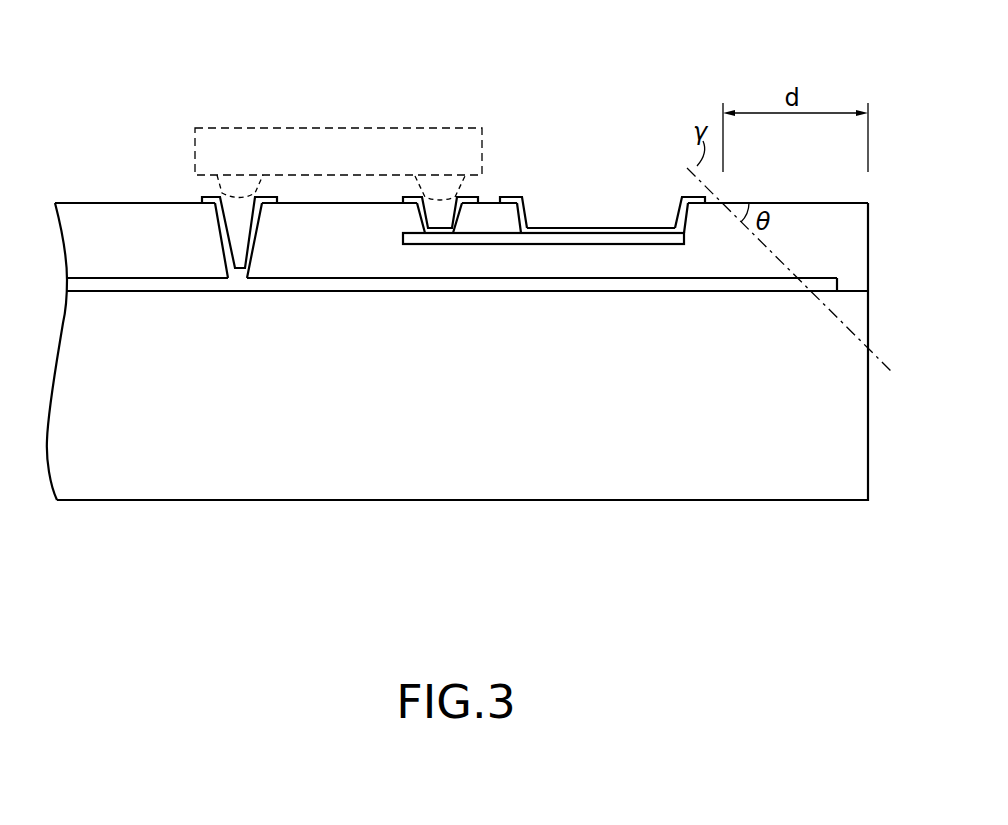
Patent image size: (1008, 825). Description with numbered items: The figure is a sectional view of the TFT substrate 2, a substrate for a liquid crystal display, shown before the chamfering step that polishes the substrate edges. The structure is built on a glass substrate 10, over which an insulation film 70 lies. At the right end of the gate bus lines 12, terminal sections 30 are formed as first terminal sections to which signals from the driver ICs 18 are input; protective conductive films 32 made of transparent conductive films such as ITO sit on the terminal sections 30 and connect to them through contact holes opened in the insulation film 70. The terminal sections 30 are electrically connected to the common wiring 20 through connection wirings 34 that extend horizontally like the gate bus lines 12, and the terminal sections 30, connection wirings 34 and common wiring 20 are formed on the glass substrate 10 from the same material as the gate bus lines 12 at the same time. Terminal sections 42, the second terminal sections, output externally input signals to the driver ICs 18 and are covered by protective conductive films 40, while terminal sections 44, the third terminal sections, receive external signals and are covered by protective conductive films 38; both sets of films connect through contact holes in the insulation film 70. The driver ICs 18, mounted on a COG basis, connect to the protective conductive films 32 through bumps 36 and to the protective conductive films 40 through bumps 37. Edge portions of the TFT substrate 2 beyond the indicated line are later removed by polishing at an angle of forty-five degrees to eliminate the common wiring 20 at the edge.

The TFT substrate 2 is at (457, 402).
The glass substrate 10 is at (843, 491).
The gate bus lines 12 is at (133, 283).
The driver ICs 18 is at (340, 127).
The common wiring 20 is at (815, 257).
The terminal sections 30 is at (277, 300).
The protective conductive films 32 is at (205, 198).
The connection wirings 34 is at (558, 285).
The bumps 36 is at (205, 192).
The bumps 37 is at (465, 190).
The protective conductive films 38 is at (647, 228).
The protective conductive films 40 is at (470, 198).
The terminal sections 42 is at (475, 250).
The terminal sections 44 is at (498, 250).
The insulation film 70 is at (73, 215).